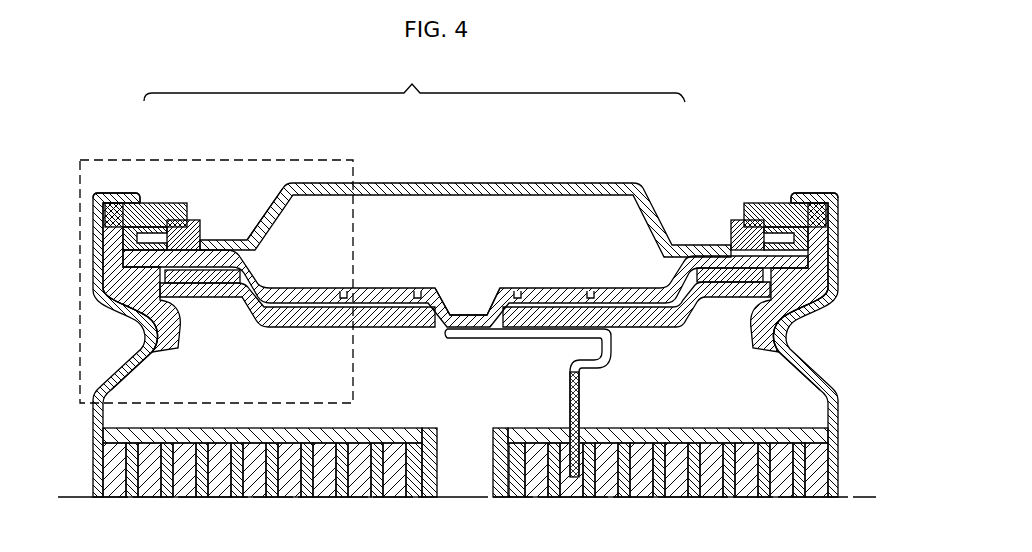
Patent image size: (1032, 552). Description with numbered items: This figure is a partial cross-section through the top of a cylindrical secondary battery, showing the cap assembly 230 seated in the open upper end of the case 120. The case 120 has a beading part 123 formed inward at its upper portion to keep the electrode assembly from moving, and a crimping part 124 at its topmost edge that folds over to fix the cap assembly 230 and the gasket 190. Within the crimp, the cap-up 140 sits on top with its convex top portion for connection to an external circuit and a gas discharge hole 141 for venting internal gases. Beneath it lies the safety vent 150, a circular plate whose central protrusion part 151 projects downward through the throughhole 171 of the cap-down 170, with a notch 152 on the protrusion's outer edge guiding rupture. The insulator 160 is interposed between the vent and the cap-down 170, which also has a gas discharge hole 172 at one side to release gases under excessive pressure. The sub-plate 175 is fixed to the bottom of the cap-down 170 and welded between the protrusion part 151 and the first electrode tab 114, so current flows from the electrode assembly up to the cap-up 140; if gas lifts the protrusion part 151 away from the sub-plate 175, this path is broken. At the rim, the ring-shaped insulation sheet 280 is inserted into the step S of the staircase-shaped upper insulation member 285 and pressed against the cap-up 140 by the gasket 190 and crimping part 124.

The first electrode tab 114 is at (582, 393).
The case 120 is at (843, 231).
The beading part 123 is at (795, 336).
The crimping part 124 is at (813, 194).
The cap-up 140 is at (572, 184).
The gas discharge hole 141 is at (273, 206).
The safety vent 150 is at (611, 288).
The protrusion part 151 is at (469, 314).
The notch 152 is at (343, 291).
The insulator 160 is at (722, 228).
The cap-down 170 is at (465, 227).
The throughhole 171 is at (537, 303).
The gas discharge hole 172 is at (229, 247).
The sub-plate 175 is at (387, 335).
The gasket 190 is at (818, 277).
The cap assembly 230 is at (414, 79).
The insulation sheet 280 is at (150, 214).
The upper insulation member 285 is at (192, 228).
The step S is at (108, 255).